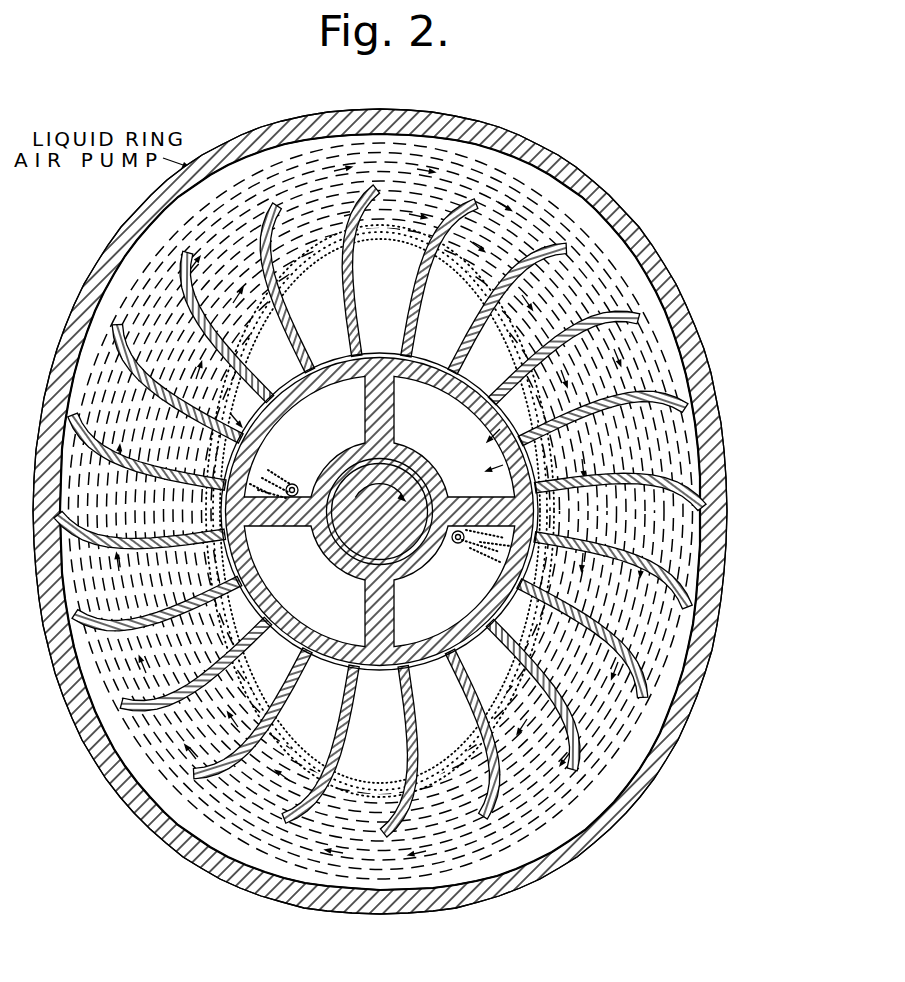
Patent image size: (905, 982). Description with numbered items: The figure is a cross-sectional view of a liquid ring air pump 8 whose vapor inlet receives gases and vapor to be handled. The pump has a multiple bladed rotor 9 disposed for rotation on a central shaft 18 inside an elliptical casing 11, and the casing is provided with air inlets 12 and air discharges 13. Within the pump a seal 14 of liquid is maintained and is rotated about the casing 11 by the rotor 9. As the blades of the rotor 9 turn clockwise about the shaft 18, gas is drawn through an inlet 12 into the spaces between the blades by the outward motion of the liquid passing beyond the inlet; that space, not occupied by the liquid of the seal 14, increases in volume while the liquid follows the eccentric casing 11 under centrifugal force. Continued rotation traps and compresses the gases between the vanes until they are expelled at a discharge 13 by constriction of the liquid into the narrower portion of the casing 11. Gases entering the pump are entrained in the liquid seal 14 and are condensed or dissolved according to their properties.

The liquid ring air pump 8 is at (243, 146).
The multiple bladed rotor 9 is at (112, 337).
The elliptical casing 11 is at (108, 245).
The air inlet 12 is at (294, 485).
The air discharge 13 is at (455, 445).
The seal of liquid 14 is at (607, 262).
The shaft 18 is at (357, 535).